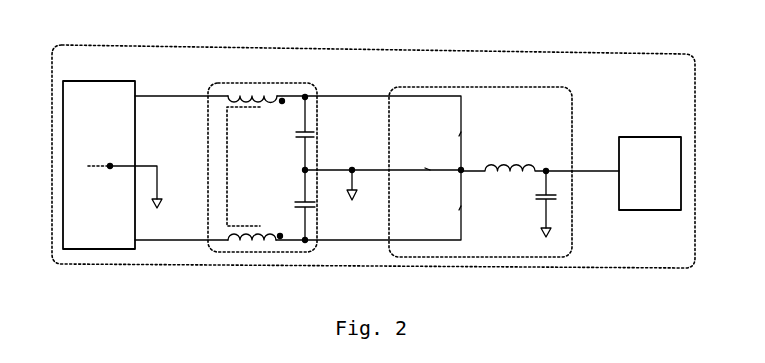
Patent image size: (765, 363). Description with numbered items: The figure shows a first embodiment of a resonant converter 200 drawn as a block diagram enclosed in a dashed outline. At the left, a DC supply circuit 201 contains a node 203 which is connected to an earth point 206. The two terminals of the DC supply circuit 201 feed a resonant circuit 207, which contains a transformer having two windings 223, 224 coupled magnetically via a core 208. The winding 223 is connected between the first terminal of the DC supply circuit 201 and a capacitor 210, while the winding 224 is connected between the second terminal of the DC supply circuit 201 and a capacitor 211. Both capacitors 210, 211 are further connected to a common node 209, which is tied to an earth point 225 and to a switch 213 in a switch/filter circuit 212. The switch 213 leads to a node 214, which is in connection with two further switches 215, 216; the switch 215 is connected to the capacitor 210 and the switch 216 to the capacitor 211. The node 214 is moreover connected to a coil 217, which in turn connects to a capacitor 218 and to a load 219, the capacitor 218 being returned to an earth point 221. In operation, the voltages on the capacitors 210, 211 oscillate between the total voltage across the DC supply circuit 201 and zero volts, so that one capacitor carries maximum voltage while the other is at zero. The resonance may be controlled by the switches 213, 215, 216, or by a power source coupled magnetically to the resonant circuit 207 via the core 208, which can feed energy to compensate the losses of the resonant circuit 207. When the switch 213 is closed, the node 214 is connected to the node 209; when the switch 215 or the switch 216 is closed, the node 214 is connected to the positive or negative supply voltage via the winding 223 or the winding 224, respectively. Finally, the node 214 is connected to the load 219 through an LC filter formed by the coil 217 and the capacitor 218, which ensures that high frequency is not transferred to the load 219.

The resonant converter 200 is at (392, 42).
The DC supply circuit 201 is at (96, 74).
The node 203 is at (109, 165).
The earth point 206 is at (157, 208).
The resonant circuit 207 is at (263, 77).
The core 208 is at (242, 160).
The node 209 is at (304, 171).
The capacitor 210 is at (296, 133).
The capacitor 211 is at (296, 203).
The switch/filter circuit 212 is at (481, 80).
The switch 213 is at (426, 167).
The node 214 is at (458, 172).
The switch 215 is at (461, 135).
The switch 216 is at (461, 208).
The coil 217 is at (503, 170).
The capacitor 218 is at (536, 197).
The load 219 is at (651, 132).
The earth point 221 is at (545, 237).
The winding 223 is at (245, 101).
The winding 224 is at (256, 237).
The earth point 225 is at (352, 200).